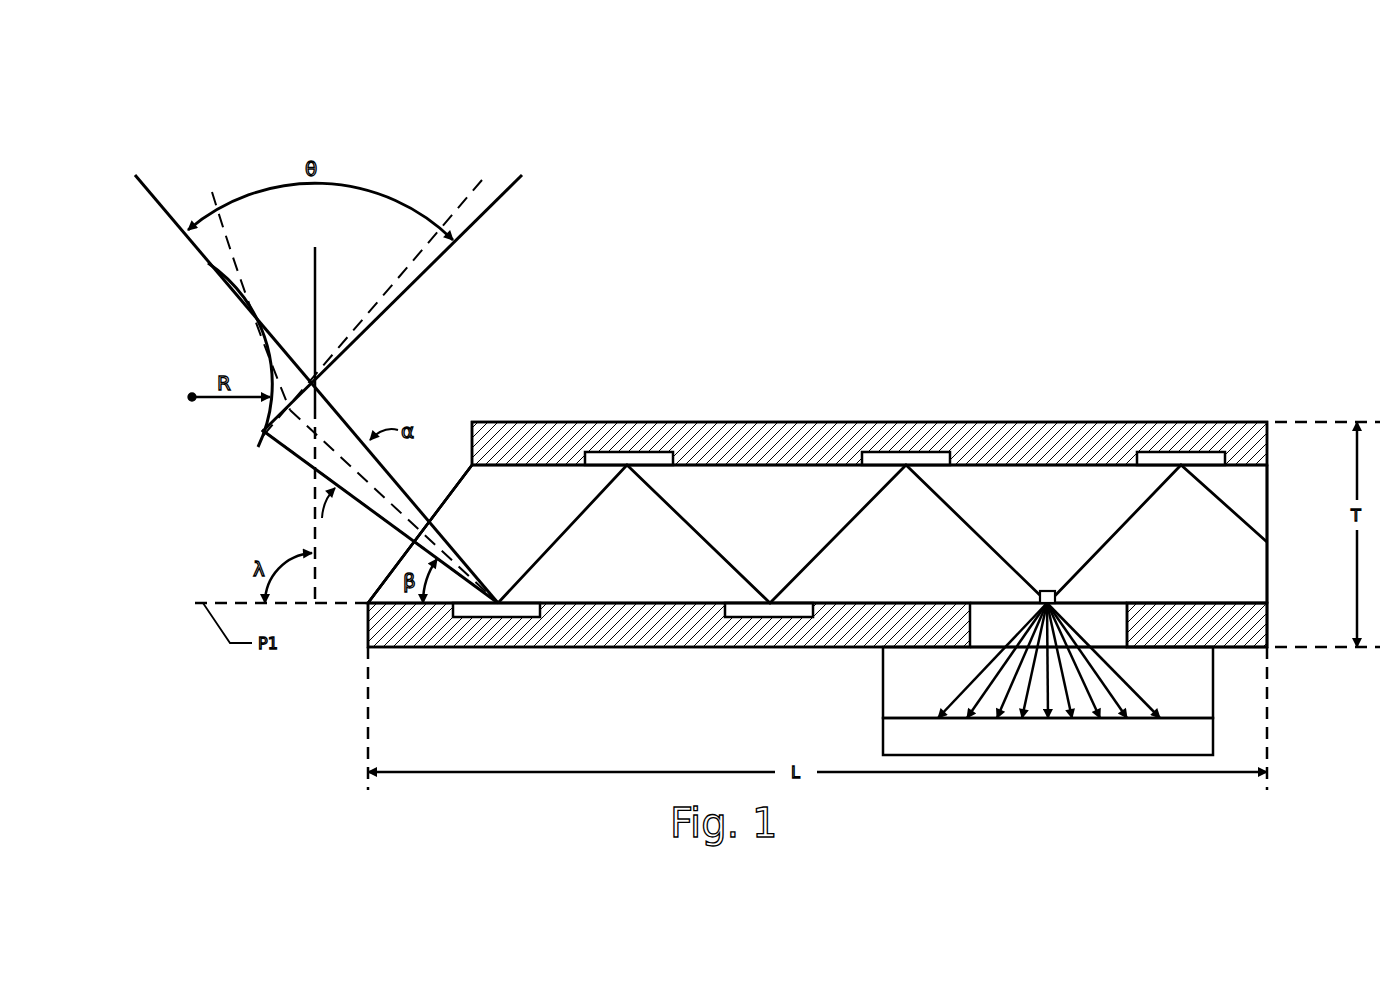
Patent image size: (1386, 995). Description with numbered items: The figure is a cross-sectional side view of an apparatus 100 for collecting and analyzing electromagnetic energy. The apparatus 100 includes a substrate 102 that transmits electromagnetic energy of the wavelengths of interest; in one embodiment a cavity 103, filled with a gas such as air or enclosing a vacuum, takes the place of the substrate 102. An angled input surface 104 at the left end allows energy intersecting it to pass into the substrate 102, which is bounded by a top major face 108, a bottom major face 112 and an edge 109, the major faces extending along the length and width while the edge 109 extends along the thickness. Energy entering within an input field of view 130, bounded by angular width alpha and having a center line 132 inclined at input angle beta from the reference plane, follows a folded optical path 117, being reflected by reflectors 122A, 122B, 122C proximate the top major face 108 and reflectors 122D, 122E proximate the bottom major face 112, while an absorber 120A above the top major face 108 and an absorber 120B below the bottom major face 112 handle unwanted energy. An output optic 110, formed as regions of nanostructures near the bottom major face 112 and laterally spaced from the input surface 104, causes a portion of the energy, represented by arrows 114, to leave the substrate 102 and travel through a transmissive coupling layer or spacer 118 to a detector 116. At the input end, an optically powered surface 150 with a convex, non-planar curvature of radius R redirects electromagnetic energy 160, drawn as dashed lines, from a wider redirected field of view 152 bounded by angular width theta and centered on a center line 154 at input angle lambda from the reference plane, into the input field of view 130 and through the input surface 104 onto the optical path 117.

The apparatus 100 is at (783, 270).
The substrate 102 is at (1243, 497).
The cavity 103 is at (1252, 580).
The input surface 104 is at (460, 478).
The top major face 108 is at (742, 465).
The edge 109 is at (1268, 557).
The output optic 110 is at (1047, 591).
The bottom major face 112 is at (1177, 603).
The arrows 114 is at (1132, 687).
The detector 116 is at (883, 738).
The optical path 117 is at (567, 533).
The coupling layer or spacer 118 is at (883, 682).
The absorber 120A is at (1042, 422).
The absorber 120B is at (437, 647).
The reflector 122A is at (632, 452).
The reflector 122B is at (910, 452).
The reflector 122C is at (1182, 452).
The reflector 122D is at (495, 617).
The reflector 122E is at (758, 617).
The input field of view 130 is at (385, 480).
The center line 132 is at (398, 530).
The optically powered surface 150 is at (270, 368).
The redirected field of view 152 is at (378, 278).
The center line 154 is at (313, 283).
The electromagnetic energy 160 is at (216, 192).